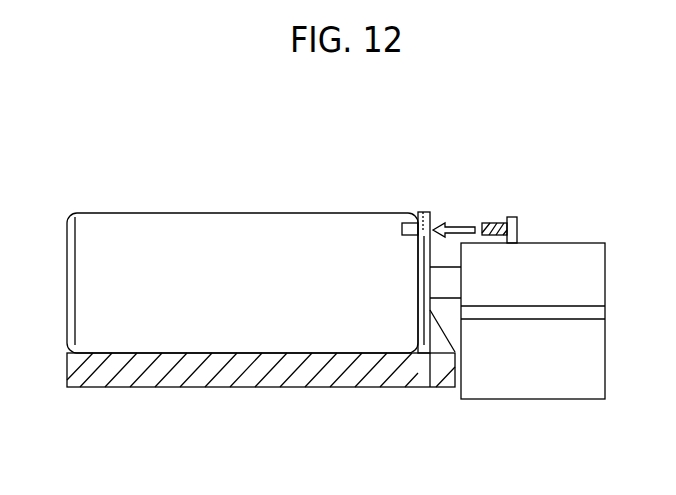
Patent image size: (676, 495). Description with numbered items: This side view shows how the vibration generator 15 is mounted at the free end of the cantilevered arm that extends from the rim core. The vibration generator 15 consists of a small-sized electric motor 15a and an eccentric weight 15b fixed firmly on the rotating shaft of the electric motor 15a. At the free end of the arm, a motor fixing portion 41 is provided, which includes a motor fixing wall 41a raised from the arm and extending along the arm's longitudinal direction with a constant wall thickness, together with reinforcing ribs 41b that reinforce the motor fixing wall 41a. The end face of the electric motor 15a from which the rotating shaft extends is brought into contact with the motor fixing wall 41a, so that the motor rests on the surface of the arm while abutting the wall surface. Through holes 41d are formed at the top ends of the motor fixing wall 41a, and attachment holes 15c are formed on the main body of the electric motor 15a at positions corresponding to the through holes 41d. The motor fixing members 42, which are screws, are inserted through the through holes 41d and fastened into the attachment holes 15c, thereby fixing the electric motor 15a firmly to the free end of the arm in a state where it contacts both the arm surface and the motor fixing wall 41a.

The vibration generator 15 is at (200, 210).
The electric motor 15a is at (115, 235).
The eccentric weight 15b is at (534, 360).
The attachment hole 15c is at (402, 229).
The motor fixing portion 41 is at (433, 217).
The motor fixing wall 41a is at (423, 345).
The reinforcing rib 41b is at (439, 343).
The through hole 41d is at (423, 212).
The motor fixing member 42 is at (517, 228).